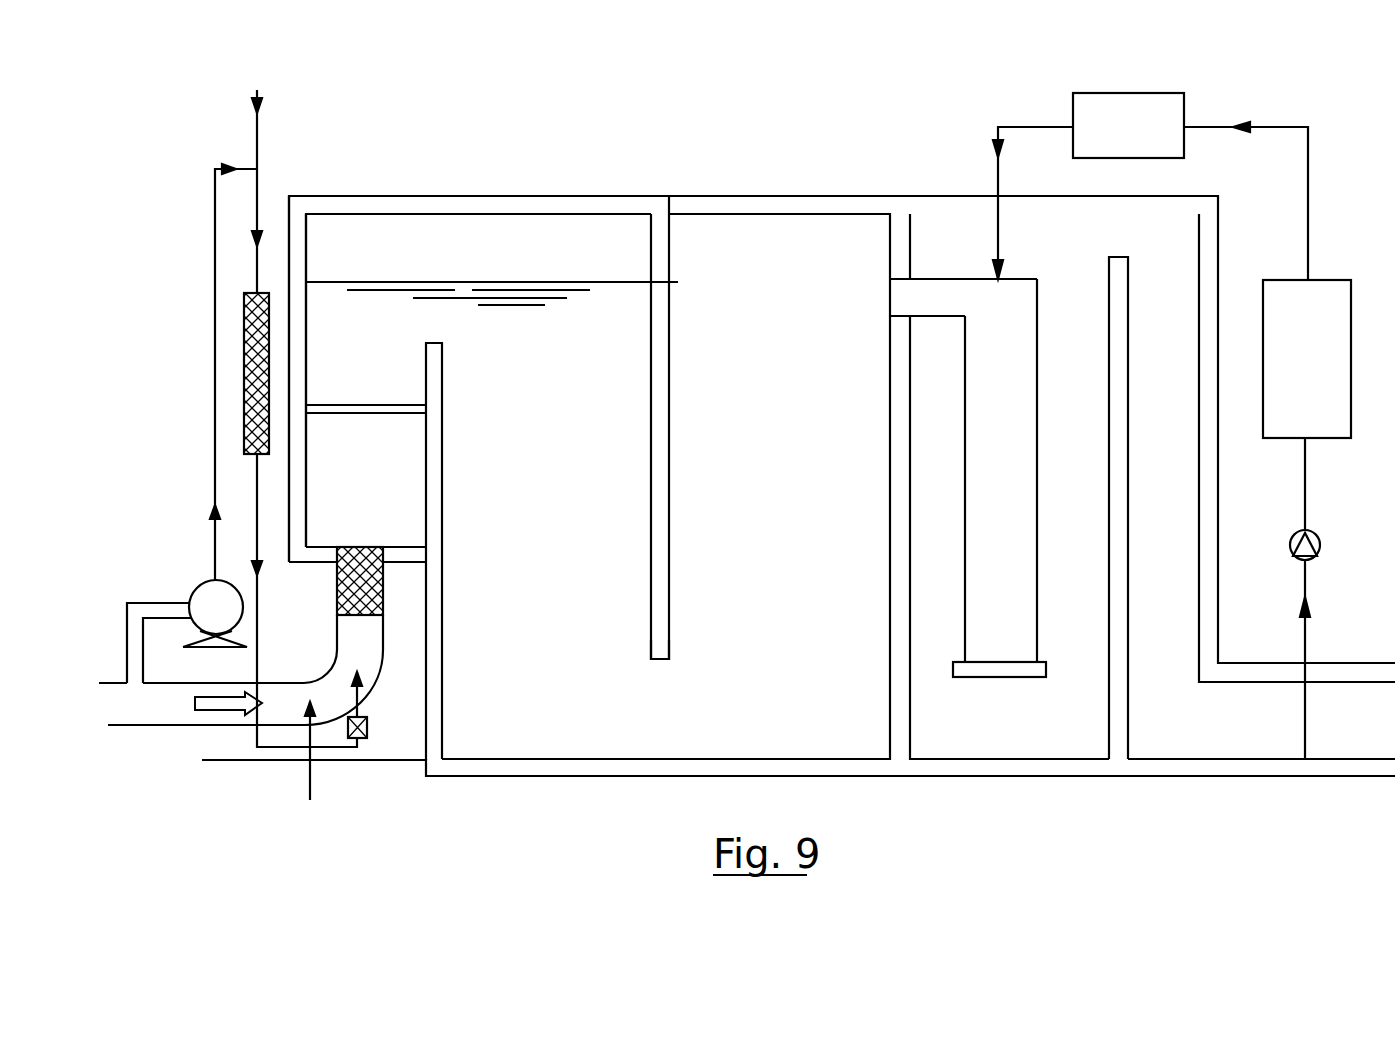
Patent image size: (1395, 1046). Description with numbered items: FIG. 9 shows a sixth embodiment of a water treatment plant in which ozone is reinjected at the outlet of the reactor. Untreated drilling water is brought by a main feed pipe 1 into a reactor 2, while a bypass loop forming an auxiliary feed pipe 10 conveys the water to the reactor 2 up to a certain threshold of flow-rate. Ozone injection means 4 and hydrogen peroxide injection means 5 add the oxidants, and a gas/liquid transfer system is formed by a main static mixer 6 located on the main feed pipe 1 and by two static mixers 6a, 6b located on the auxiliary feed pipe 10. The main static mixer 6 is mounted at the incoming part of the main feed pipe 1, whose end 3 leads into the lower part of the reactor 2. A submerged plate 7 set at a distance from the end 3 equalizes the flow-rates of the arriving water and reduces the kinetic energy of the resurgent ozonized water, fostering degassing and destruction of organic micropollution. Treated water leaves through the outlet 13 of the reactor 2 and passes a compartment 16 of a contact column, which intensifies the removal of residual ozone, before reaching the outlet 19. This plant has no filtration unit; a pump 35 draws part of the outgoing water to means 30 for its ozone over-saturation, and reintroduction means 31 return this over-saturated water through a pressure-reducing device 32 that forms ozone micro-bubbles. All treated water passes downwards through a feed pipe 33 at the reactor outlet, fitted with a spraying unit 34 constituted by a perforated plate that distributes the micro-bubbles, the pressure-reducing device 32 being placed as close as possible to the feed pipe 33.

The main feed pipe 1 is at (153, 703).
The reactor 2 is at (393, 507).
The end of the feed pipe 3 is at (357, 547).
The ozone injection means 4 is at (238, 97).
The hydrogen peroxide injection means 5 is at (370, 843).
The main static mixer 6 is at (337, 603).
The static mixer 6a is at (245, 393).
The static mixer 6b is at (368, 727).
The submerged plate 7 is at (425, 413).
The auxiliary feed pipe 10 is at (145, 612).
The outlet of the reactor 13 is at (440, 343).
The compartment of the contact column 16 is at (635, 508).
The outlet of the second compartment 19 is at (663, 661).
The ozone over-saturation means 30 is at (1327, 280).
The reintroduction means 31 is at (982, 137).
The pressure-reducing device 32 is at (1184, 147).
The feed pipe 33 is at (1020, 455).
The spraying unit 34 is at (1033, 677).
The pump 35 is at (1320, 545).